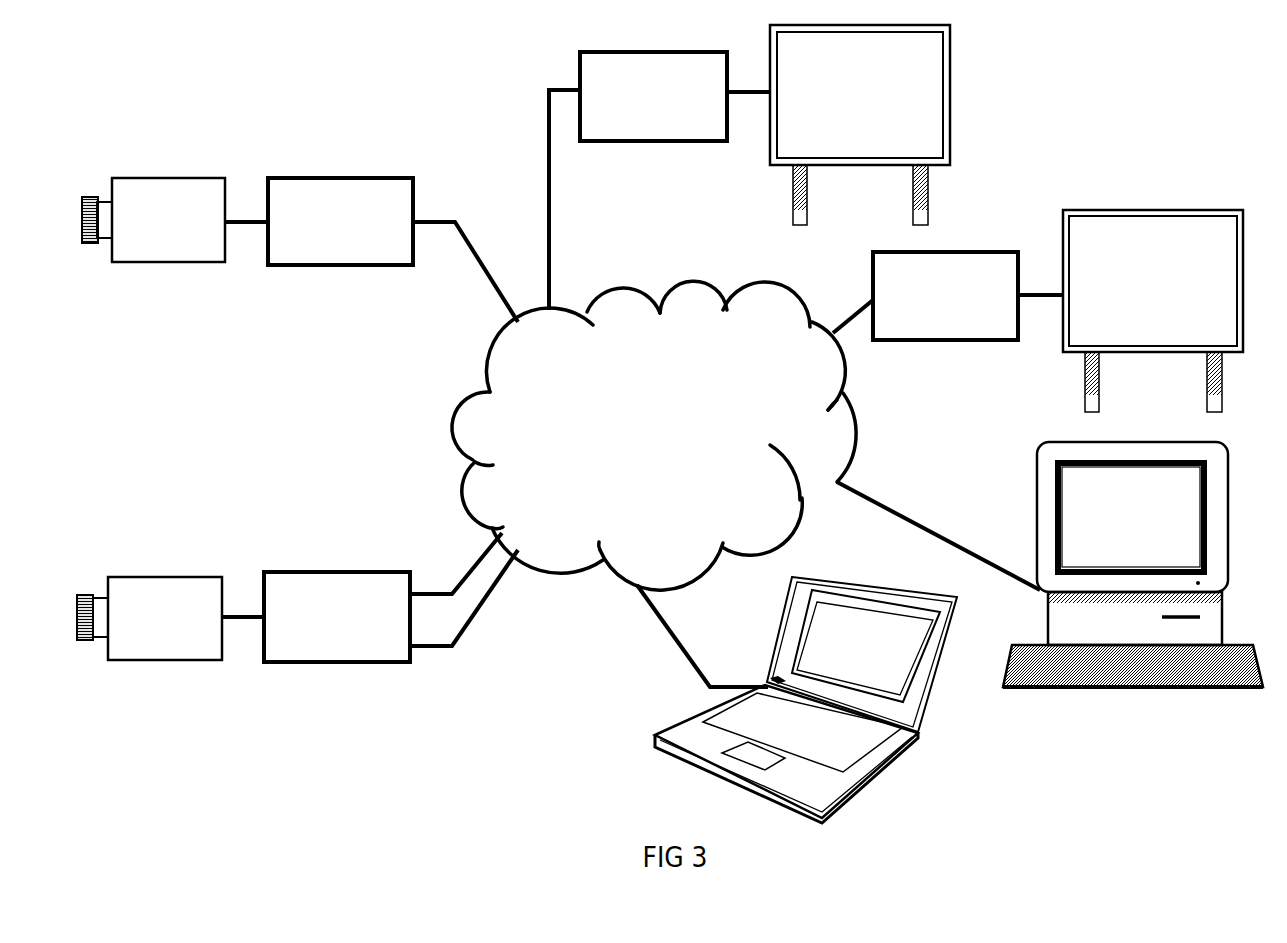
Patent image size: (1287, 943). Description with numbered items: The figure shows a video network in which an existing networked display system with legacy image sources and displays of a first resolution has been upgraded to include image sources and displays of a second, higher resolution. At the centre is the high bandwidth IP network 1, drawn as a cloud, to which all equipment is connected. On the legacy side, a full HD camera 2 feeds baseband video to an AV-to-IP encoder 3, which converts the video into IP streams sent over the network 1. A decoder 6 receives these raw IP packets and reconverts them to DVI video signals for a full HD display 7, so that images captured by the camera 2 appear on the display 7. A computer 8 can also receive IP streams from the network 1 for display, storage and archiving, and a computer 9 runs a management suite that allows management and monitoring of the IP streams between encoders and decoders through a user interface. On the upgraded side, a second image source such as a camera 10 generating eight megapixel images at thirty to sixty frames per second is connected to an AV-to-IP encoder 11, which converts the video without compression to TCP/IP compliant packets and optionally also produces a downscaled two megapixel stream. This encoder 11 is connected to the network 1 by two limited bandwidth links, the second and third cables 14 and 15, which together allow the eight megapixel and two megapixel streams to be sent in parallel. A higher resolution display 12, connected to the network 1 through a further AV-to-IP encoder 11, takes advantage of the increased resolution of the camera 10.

The network 1 is at (654, 435).
The camera 2 is at (153, 220).
The AV-to-IP encoder 3 is at (340, 221).
The decoder 6 is at (653, 96).
The display 7 is at (860, 125).
The computer 8 is at (1133, 564).
The computer 9 is at (806, 700).
The camera 10 is at (149, 618).
The AV-to-IP encoder 11 is at (641, 457).
The display 12 is at (1153, 311).
The second cable 14 is at (457, 561).
The third cable 15 is at (494, 604).